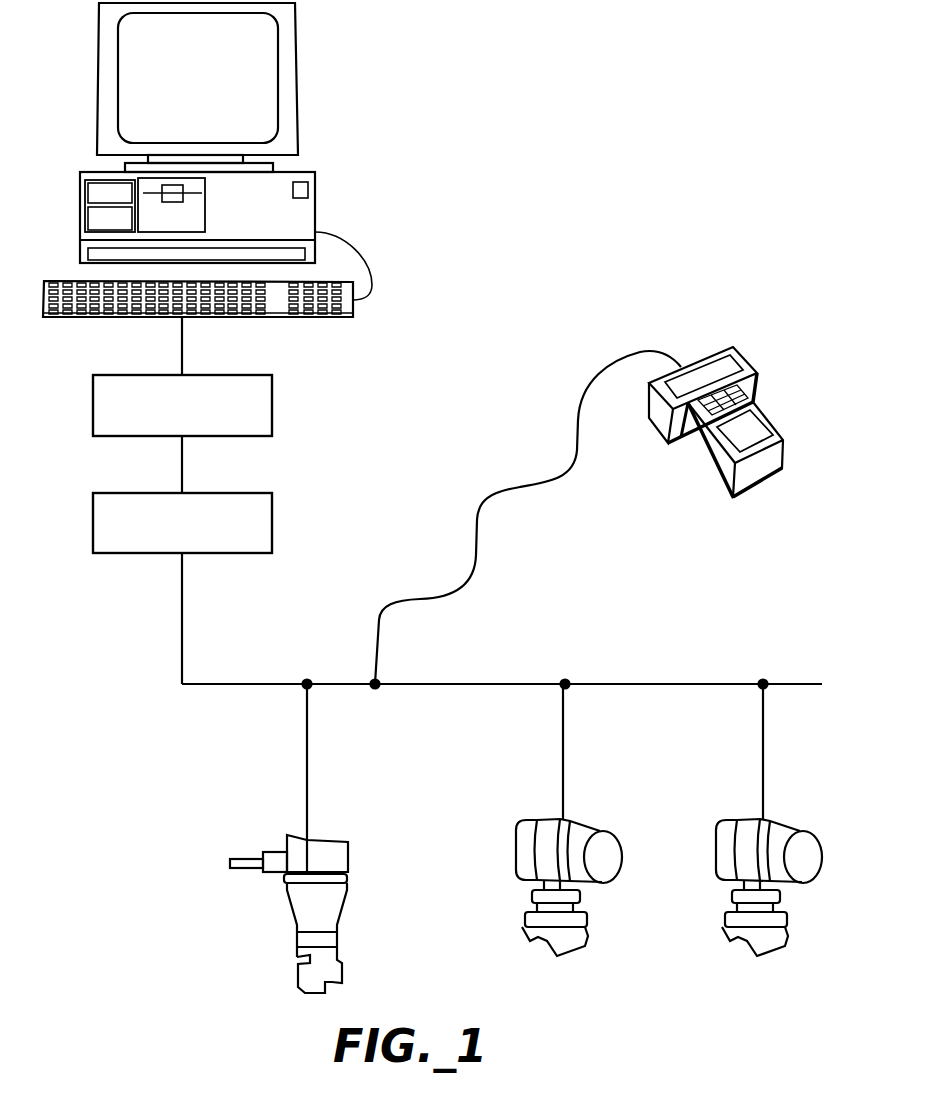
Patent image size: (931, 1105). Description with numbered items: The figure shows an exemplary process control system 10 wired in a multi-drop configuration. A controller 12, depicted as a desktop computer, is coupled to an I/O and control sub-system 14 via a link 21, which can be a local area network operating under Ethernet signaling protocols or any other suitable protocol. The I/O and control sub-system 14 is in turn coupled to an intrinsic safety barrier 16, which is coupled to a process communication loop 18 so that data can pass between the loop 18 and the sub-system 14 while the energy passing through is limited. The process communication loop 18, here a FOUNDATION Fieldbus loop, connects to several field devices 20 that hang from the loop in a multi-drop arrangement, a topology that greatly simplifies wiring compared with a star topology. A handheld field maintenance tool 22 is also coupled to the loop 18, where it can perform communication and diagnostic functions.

The system 10 is at (518, 233).
The controller 12 is at (297, 126).
The I/O and control sub-system 14 is at (272, 408).
The intrinsic safety barrier 16 is at (272, 524).
The process communication loop 18 is at (460, 683).
The field devices 20 is at (272, 876).
The link 21 is at (182, 356).
The handheld field maintenance tool 22 is at (743, 356).